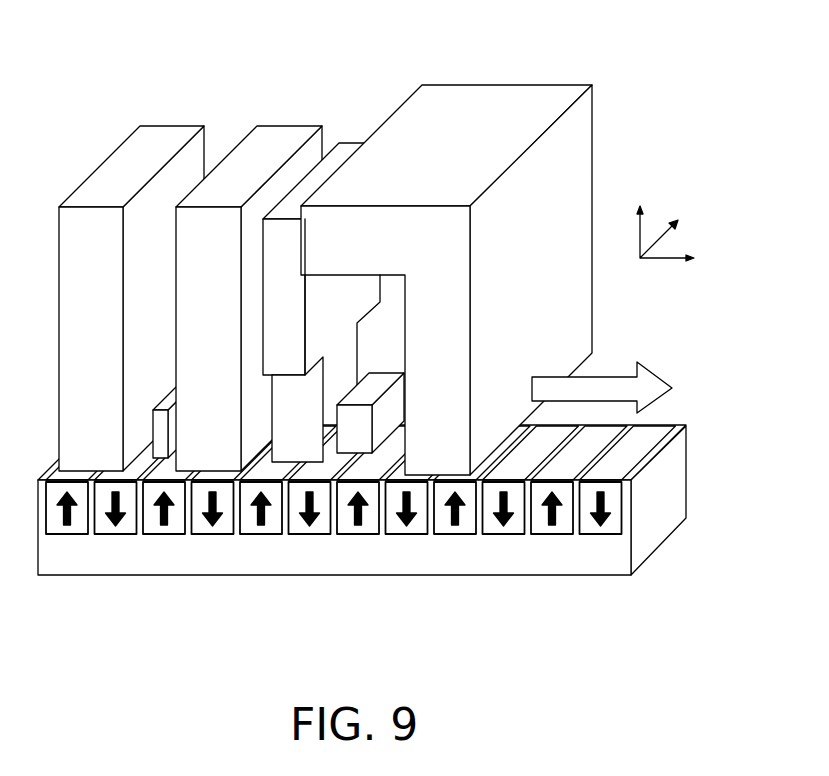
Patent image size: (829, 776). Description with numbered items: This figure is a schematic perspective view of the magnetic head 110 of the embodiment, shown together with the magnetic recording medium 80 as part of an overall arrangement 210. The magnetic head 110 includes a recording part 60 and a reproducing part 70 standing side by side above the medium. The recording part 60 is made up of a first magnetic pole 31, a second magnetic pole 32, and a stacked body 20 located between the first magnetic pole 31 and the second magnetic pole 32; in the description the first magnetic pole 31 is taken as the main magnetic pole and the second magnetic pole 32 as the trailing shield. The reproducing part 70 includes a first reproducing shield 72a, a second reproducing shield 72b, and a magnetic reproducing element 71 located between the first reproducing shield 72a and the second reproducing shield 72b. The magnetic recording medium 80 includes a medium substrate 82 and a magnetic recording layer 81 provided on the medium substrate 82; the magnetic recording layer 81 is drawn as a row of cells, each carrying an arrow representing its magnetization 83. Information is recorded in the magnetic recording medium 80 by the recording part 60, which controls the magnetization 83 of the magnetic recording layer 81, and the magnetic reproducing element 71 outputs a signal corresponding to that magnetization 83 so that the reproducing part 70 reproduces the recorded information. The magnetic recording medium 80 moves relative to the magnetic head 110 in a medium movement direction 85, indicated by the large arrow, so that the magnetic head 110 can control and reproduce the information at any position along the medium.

The magnetic recording device 210 is at (417, 358).
The magnetic head 110 is at (376, 359).
The reproducing part 70 is at (193, 251).
The first reproducing shield 72a is at (158, 140).
The magnetic reproducing element 71 is at (157, 393).
The second reproducing shield 72b is at (158, 73).
The recording part 60 is at (422, 386).
The first magnetic pole 31 is at (300, 447).
The stacked body 20 is at (355, 432).
The second magnetic pole 32 is at (443, 452).
The magnetic recording medium 80 is at (362, 549).
The magnetic recording layer 81 is at (63, 537).
The medium substrate 82 is at (110, 552).
The magnetization 83 is at (358, 559).
The medium movement direction 85 is at (612, 380).